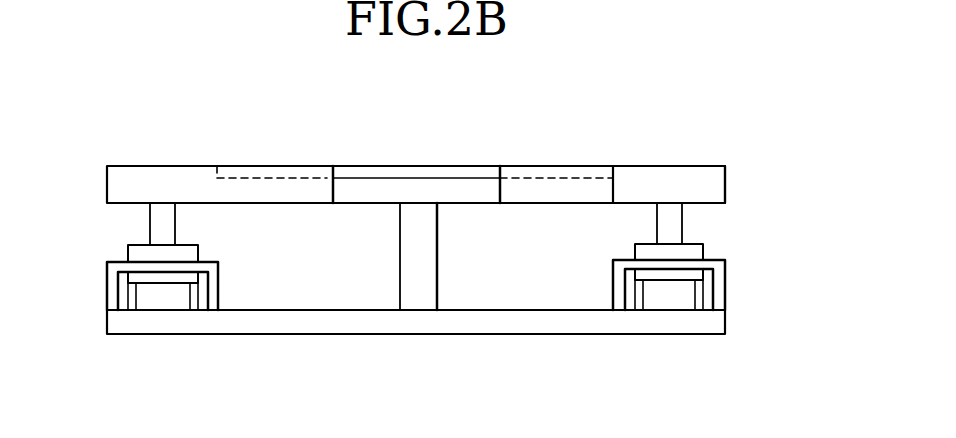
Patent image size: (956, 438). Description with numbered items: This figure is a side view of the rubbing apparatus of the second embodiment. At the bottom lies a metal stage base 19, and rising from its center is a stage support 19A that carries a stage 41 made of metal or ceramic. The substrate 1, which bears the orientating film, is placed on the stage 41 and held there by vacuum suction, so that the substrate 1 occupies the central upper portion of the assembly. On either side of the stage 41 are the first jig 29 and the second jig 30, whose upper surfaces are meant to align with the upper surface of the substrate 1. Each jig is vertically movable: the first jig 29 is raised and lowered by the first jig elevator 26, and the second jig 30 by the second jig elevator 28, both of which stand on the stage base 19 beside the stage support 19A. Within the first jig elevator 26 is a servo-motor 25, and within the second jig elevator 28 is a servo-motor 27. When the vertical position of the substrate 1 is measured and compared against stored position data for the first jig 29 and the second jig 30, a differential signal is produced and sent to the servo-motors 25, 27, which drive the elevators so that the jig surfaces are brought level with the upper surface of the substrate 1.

The substrate 1 is at (489, 173).
The stage base 19 is at (653, 325).
The stage support 19A is at (440, 283).
The servo-motor 25 is at (675, 293).
The first jig elevator 26 is at (708, 258).
The servo-motor 27 is at (147, 295).
The second jig elevator 28 is at (117, 258).
The first jig 29 is at (683, 180).
The second jig 30 is at (153, 183).
The stage 41 is at (492, 195).